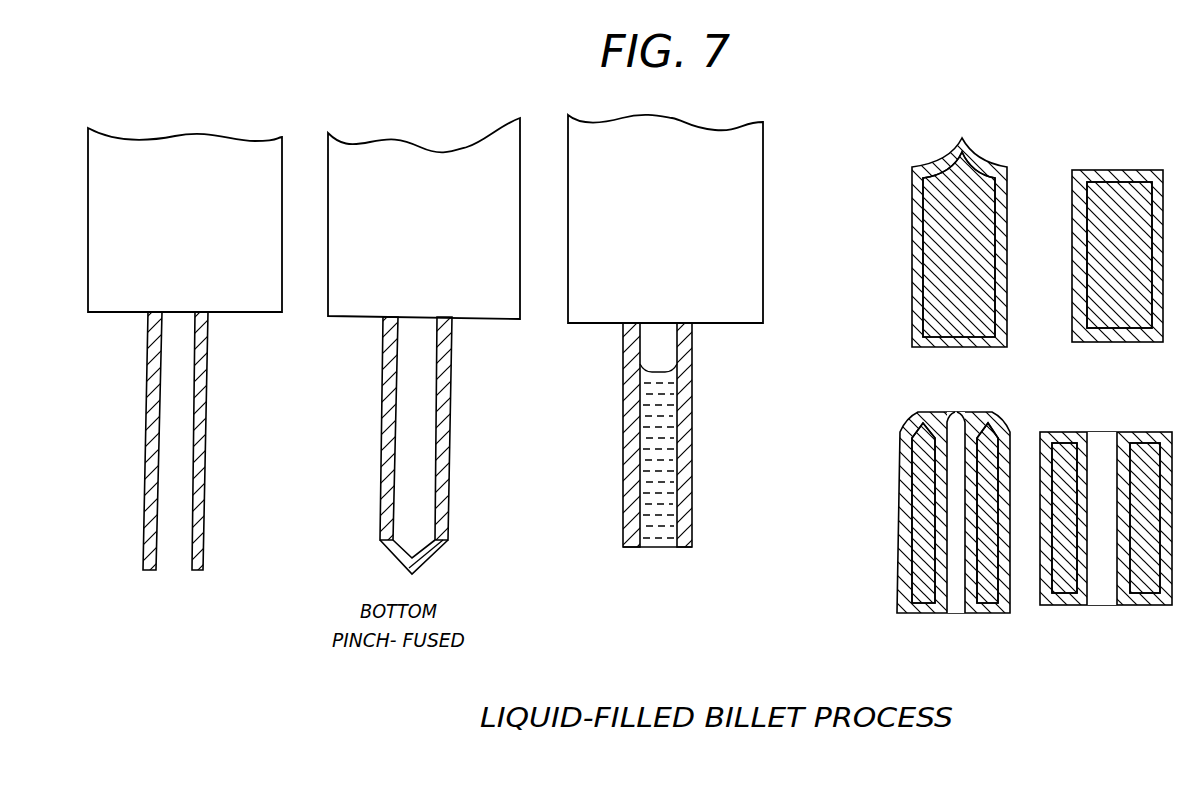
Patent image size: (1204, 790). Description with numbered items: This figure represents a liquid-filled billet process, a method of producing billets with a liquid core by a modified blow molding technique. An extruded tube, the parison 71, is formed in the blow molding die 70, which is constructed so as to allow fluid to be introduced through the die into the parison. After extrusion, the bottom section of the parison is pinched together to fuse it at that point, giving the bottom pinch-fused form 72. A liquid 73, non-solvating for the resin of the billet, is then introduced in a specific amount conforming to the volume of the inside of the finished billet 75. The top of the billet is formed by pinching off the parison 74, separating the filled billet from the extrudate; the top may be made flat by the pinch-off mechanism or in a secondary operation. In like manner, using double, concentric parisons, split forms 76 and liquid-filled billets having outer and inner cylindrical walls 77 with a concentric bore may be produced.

The blow molding die 70 is at (178, 135).
The parison 71 is at (210, 360).
The bottom pinch-fused parison 72 is at (447, 483).
The liquid 73 is at (662, 468).
The pinched-off parison 74 is at (962, 148).
The finished billet 75 is at (1103, 175).
The split billet with pointed cores 76 is at (970, 613).
The liquid filled billet having outer and inner cylindrical walls 77 is at (1123, 605).